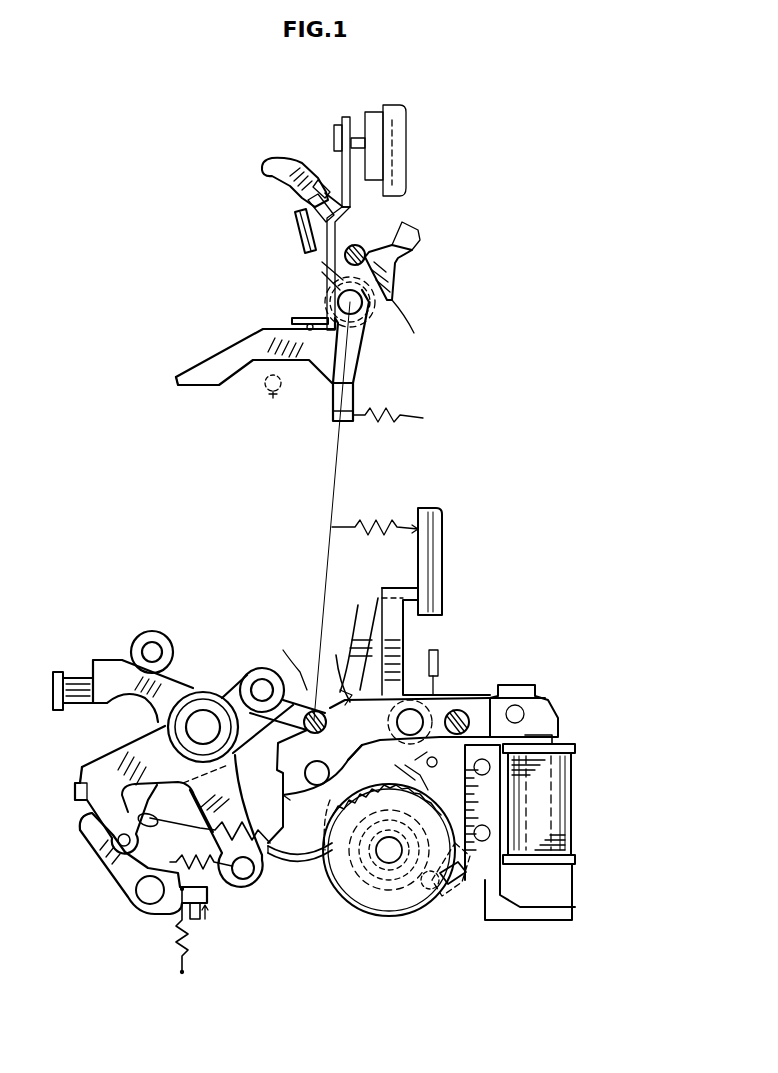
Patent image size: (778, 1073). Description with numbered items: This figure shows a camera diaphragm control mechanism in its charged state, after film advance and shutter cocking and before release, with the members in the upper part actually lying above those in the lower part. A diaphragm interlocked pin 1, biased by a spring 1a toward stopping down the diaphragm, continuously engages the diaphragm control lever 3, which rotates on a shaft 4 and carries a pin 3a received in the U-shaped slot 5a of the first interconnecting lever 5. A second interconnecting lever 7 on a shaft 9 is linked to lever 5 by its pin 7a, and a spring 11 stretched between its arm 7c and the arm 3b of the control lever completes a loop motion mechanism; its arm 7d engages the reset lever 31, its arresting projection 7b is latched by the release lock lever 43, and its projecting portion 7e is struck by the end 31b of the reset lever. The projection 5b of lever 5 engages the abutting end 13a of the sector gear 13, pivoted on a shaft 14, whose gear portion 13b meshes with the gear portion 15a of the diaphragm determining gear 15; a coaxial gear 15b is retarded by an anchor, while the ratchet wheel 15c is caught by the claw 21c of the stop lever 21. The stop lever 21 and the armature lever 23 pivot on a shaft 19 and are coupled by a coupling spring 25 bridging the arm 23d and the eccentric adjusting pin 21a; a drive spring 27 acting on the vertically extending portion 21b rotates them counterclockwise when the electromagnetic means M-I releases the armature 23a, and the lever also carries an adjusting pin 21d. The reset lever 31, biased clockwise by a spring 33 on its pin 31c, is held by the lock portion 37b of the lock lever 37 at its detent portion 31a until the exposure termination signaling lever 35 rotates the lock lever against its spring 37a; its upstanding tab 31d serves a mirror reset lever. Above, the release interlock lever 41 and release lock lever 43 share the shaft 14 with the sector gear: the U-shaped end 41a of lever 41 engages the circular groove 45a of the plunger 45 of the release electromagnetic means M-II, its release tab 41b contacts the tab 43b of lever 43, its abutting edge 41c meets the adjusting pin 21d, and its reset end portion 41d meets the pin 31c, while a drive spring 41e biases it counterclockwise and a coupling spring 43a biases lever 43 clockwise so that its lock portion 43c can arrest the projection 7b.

The diaphragm interlocked pin 1 is at (433, 555).
The spring 1a is at (372, 520).
The diaphragm control lever 3 is at (386, 592).
The pin 3a is at (378, 650).
The arm 3b is at (335, 862).
The shaft 4 is at (404, 777).
The first interconnecting lever 5 is at (330, 712).
The U-shaped slot 5a is at (370, 665).
The projection 5b is at (342, 690).
The second interconnecting lever 7 is at (240, 683).
The pin 7a is at (245, 680).
The arresting projection 7b is at (345, 212).
The arm 7c is at (155, 818).
The arm 7d is at (106, 665).
The projecting portion 7e is at (112, 703).
The shaft 9 is at (203, 726).
The spring 11 is at (213, 823).
The sector gear 13 is at (306, 862).
The abutting end 13a is at (307, 764).
The gear portion 13b is at (296, 858).
The shaft 14 is at (356, 304).
The diaphragm determining gear 15 is at (400, 905).
The gear portion 15a is at (386, 862).
The gear 15b is at (378, 880).
The ratchet wheel 15c is at (393, 790).
The shaft 19 is at (428, 705).
The stop lever 21 is at (395, 265).
The eccentric adjusting pin 21a is at (490, 700).
The vertically extending portion 21b is at (438, 654).
The claw 21c is at (390, 292).
The adjusting pin 21d is at (402, 252).
The armature lever 23 is at (555, 690).
The armature 23a is at (548, 718).
The arm 23d is at (434, 783).
The coupling spring 25 is at (466, 710).
The drive spring 27 is at (470, 695).
The reset lever 31 is at (136, 764).
The detent portion 31a is at (131, 842).
The end 31b is at (90, 772).
The pin 31c is at (240, 900).
The upstanding tab 31d is at (75, 790).
The spring 33 is at (201, 868).
The exposure termination signaling lever 35 is at (209, 928).
The lock lever 37 is at (100, 862).
The spring 37a is at (176, 932).
The lock portion 37b is at (88, 820).
The release interlock lever 41 is at (252, 342).
The U-shaped end 41a is at (344, 165).
The release tab 41b is at (306, 204).
The abutting edge 41c is at (330, 272).
The reset end portion 41d is at (197, 380).
The drive spring 41e is at (388, 413).
The release lock lever 43 is at (268, 166).
The coupling spring 43a is at (336, 290).
The tab 43b is at (296, 234).
The lock portion 43c is at (320, 184).
The plunger 45 is at (342, 125).
The circular groove 45a is at (345, 118).
The electromagnetic means M-I is at (584, 793).
The release electromagnetic means M-II is at (398, 106).